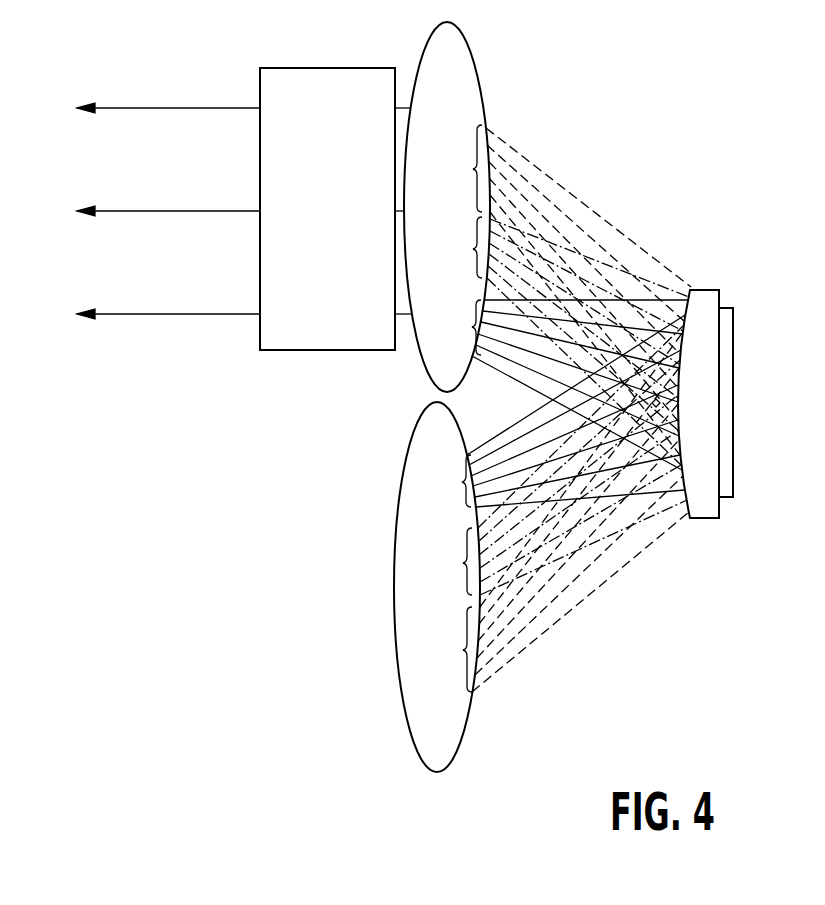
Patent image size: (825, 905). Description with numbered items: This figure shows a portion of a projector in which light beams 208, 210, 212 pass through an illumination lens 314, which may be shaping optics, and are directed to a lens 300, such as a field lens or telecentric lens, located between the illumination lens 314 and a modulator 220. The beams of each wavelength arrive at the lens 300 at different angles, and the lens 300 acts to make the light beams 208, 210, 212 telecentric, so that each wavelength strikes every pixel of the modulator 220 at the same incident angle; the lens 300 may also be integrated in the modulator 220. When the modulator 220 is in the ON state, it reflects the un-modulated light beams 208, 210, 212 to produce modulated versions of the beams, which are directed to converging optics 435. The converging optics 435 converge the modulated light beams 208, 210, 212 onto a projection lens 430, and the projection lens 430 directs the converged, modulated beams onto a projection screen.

The projection lens 430 is at (347, 275).
The converging optics 435 is at (480, 77).
The illumination lens 314 is at (458, 750).
The lens 300 is at (715, 399).
The modulator 220 is at (733, 335).
The light beams 208 is at (148, 107).
The light beams 210 is at (148, 209).
The light beams 212 is at (148, 312).